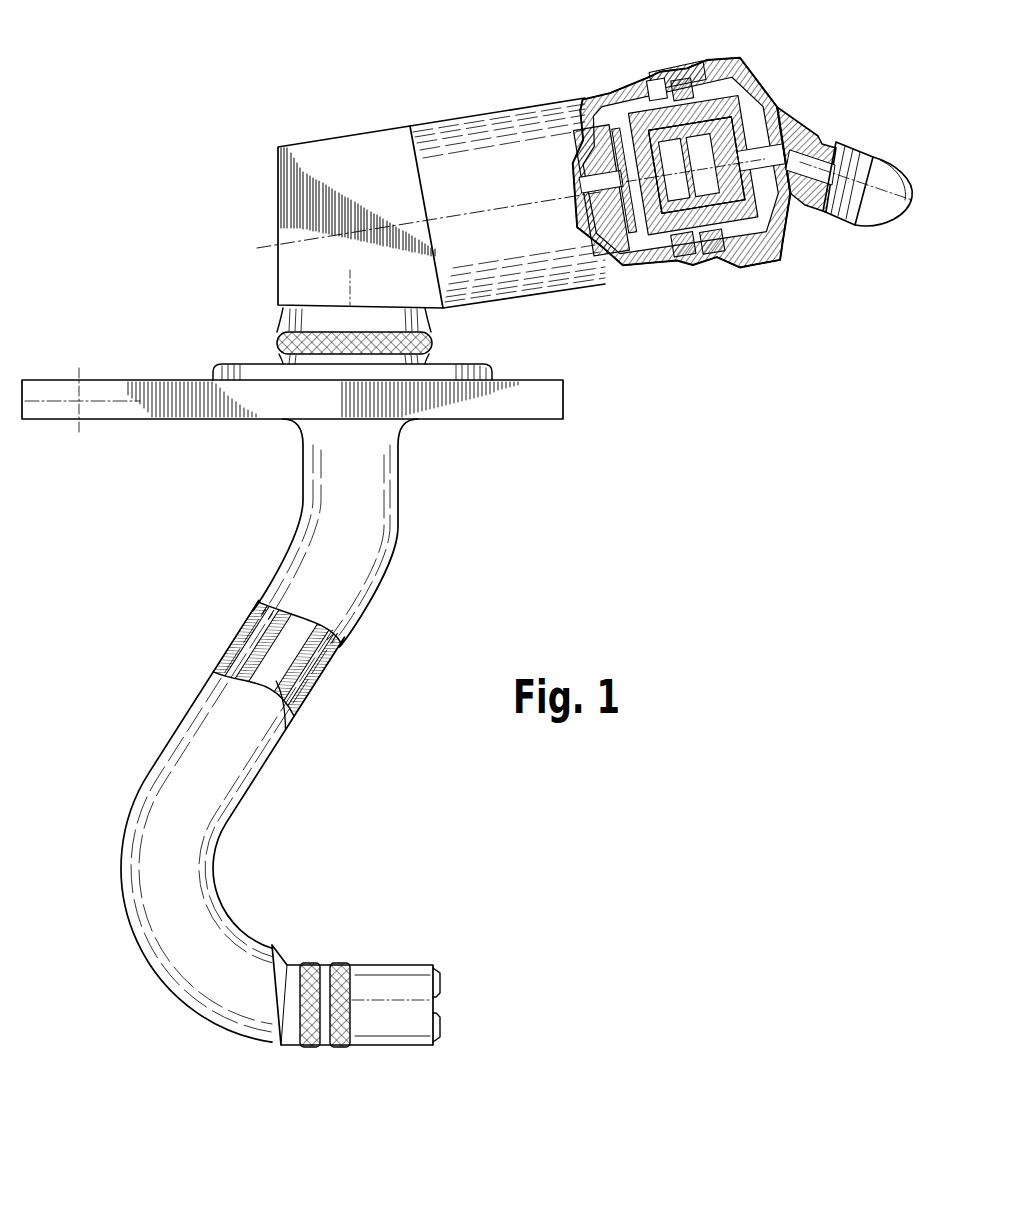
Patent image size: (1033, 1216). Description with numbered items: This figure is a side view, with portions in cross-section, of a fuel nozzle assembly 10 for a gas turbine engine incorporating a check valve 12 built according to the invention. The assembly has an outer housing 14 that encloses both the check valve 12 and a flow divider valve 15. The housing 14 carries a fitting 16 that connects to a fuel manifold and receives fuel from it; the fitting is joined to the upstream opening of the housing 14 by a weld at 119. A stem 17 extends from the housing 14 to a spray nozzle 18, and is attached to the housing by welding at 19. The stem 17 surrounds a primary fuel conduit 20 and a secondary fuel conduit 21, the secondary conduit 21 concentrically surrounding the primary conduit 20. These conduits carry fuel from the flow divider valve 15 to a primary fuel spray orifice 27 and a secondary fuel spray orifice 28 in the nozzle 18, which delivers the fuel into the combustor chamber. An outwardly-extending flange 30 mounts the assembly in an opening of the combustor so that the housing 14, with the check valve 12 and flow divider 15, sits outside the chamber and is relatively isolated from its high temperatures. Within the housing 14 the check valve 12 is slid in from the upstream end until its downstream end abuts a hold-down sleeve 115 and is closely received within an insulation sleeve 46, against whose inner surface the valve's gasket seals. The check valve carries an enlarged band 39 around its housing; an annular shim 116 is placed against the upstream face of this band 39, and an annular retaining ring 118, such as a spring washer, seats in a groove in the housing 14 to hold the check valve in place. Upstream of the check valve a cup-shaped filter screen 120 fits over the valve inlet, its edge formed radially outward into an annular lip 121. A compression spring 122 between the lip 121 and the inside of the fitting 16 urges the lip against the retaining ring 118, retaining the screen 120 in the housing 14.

The nozzle assembly 10 is at (703, 441).
The check valve 12 is at (750, 108).
The outer housing 14 is at (330, 163).
The flow divider valve 15 is at (600, 128).
The fitting 16 is at (856, 226).
The stem 17 is at (382, 528).
The spray nozzle 18 is at (392, 966).
The weld 19 is at (277, 343).
The primary fuel conduit 20 is at (295, 638).
The secondary fuel conduit 21 is at (293, 668).
The primary fuel spray orifice 27 is at (443, 1016).
The secondary fuel spray orifice 28 is at (443, 991).
The outwardly-extending flange 30 is at (546, 403).
The enlarged band 39 is at (663, 242).
The insulation sleeve 46 is at (640, 262).
The hold-down sleeve 115 is at (625, 249).
The annular shim 116 is at (695, 262).
The annular retaining ring 118 is at (703, 268).
The weld 119 is at (757, 267).
The filter screen 120 is at (788, 130).
The annular lip 121 is at (680, 90).
The compression spring 122 is at (683, 96).